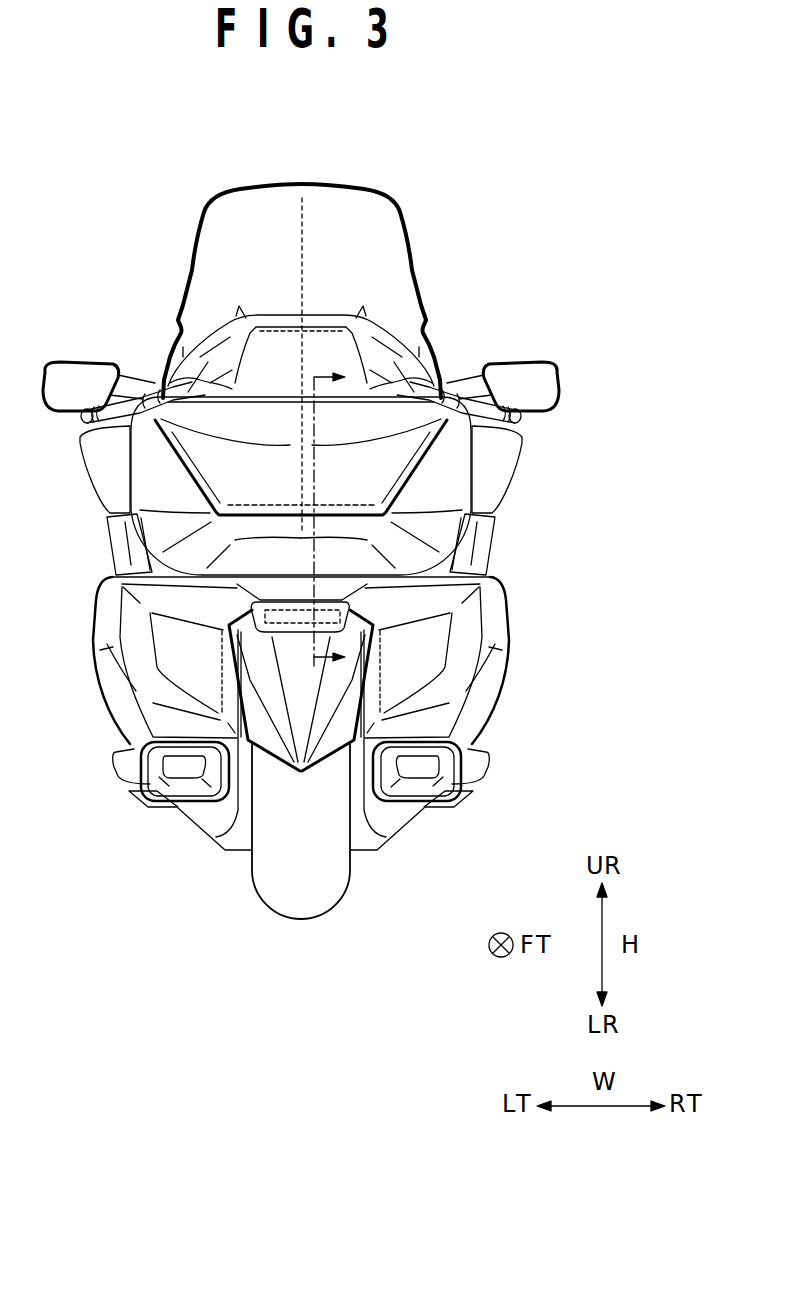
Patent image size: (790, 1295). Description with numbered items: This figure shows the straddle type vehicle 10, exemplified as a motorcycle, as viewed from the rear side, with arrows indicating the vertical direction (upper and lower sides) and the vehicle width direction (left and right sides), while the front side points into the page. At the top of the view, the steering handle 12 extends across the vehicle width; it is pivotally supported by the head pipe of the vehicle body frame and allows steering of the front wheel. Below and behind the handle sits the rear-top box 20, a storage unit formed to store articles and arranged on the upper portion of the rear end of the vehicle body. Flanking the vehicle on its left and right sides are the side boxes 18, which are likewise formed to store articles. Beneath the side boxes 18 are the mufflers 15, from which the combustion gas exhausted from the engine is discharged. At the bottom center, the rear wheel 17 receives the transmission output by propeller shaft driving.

The straddle type vehicle 10 is at (137, 208).
The steering handle 12 is at (523, 416).
The mufflers 15 is at (128, 787).
The rear wheel 17 is at (333, 872).
The side boxes 18 is at (115, 690).
The rear-top box 20 is at (455, 484).